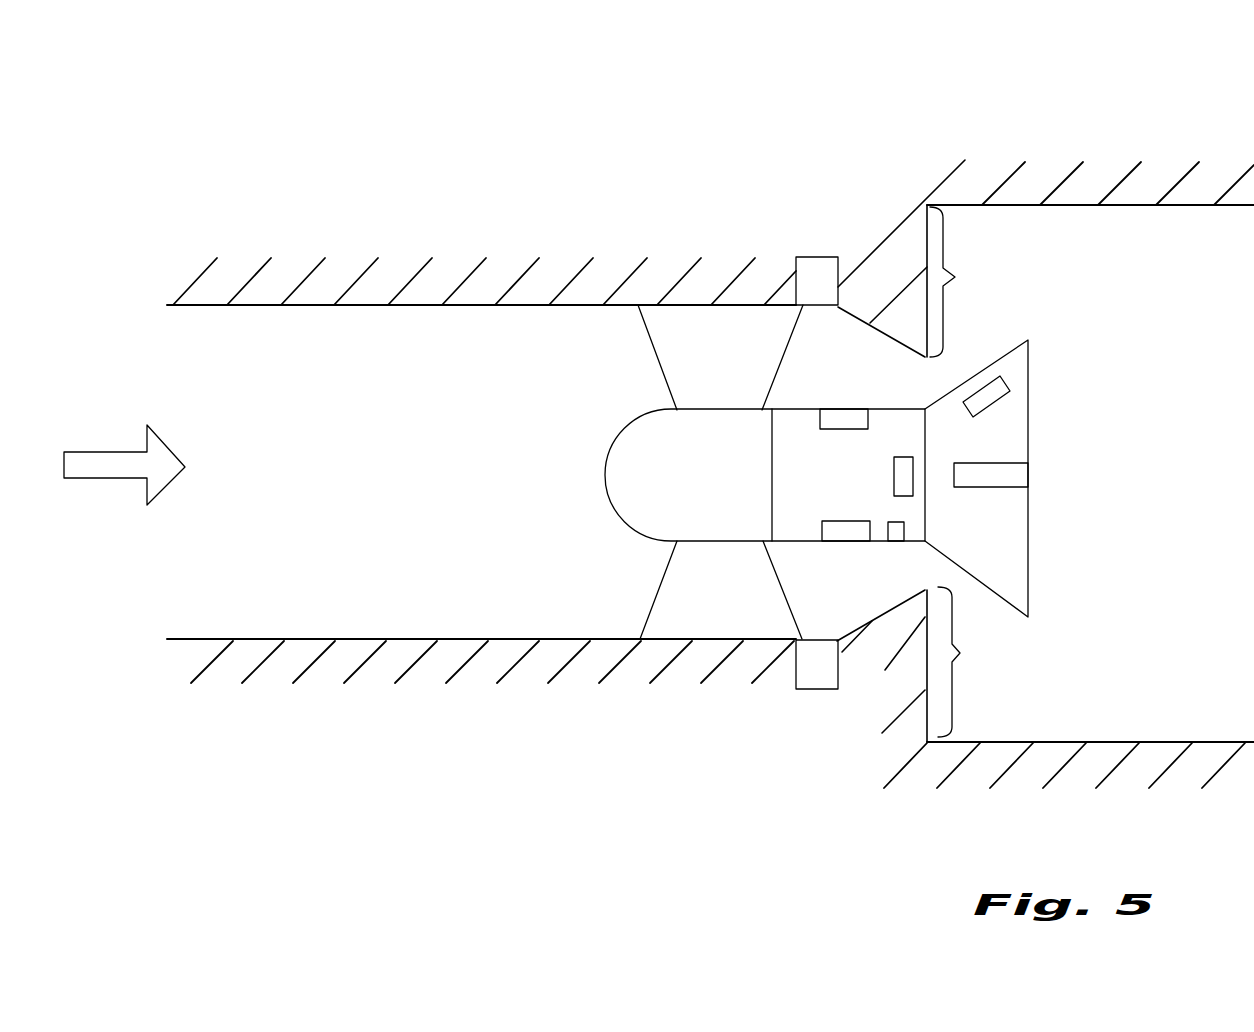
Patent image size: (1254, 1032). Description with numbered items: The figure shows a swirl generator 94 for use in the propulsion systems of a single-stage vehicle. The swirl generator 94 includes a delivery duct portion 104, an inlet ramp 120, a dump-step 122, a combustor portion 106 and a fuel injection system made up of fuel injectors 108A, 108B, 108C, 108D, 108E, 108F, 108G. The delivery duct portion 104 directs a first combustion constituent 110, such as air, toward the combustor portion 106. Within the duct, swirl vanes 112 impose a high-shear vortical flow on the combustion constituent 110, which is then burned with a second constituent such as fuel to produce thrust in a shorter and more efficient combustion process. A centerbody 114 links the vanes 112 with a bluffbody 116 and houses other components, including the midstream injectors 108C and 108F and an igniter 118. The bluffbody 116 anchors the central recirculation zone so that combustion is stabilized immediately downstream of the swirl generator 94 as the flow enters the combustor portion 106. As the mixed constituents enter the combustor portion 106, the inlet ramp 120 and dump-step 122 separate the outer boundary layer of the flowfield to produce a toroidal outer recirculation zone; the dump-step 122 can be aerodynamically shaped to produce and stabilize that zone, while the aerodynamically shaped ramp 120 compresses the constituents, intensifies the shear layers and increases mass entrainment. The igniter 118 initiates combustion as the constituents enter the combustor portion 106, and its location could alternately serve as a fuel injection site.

The swirl generator 94 is at (772, 161).
The delivery duct portion 104 is at (290, 226).
The combustor portion 106 is at (1062, 156).
The fuel injector 108A is at (822, 288).
The fuel injector 108B is at (810, 672).
The midstream injector 108C is at (845, 418).
The fuel injector 108D is at (840, 532).
The fuel injector 108E is at (995, 387).
The midstream injector 108F is at (898, 467).
The fuel injector 108G is at (895, 530).
The first combustion constituent 110 is at (105, 465).
The swirl vanes 112 is at (707, 353).
The centerbody 114 is at (803, 457).
The bluffbody 116 is at (1008, 512).
The igniter 118 is at (1017, 477).
The inlet ramp 120 is at (908, 337).
The dump-step 122 is at (969, 472).